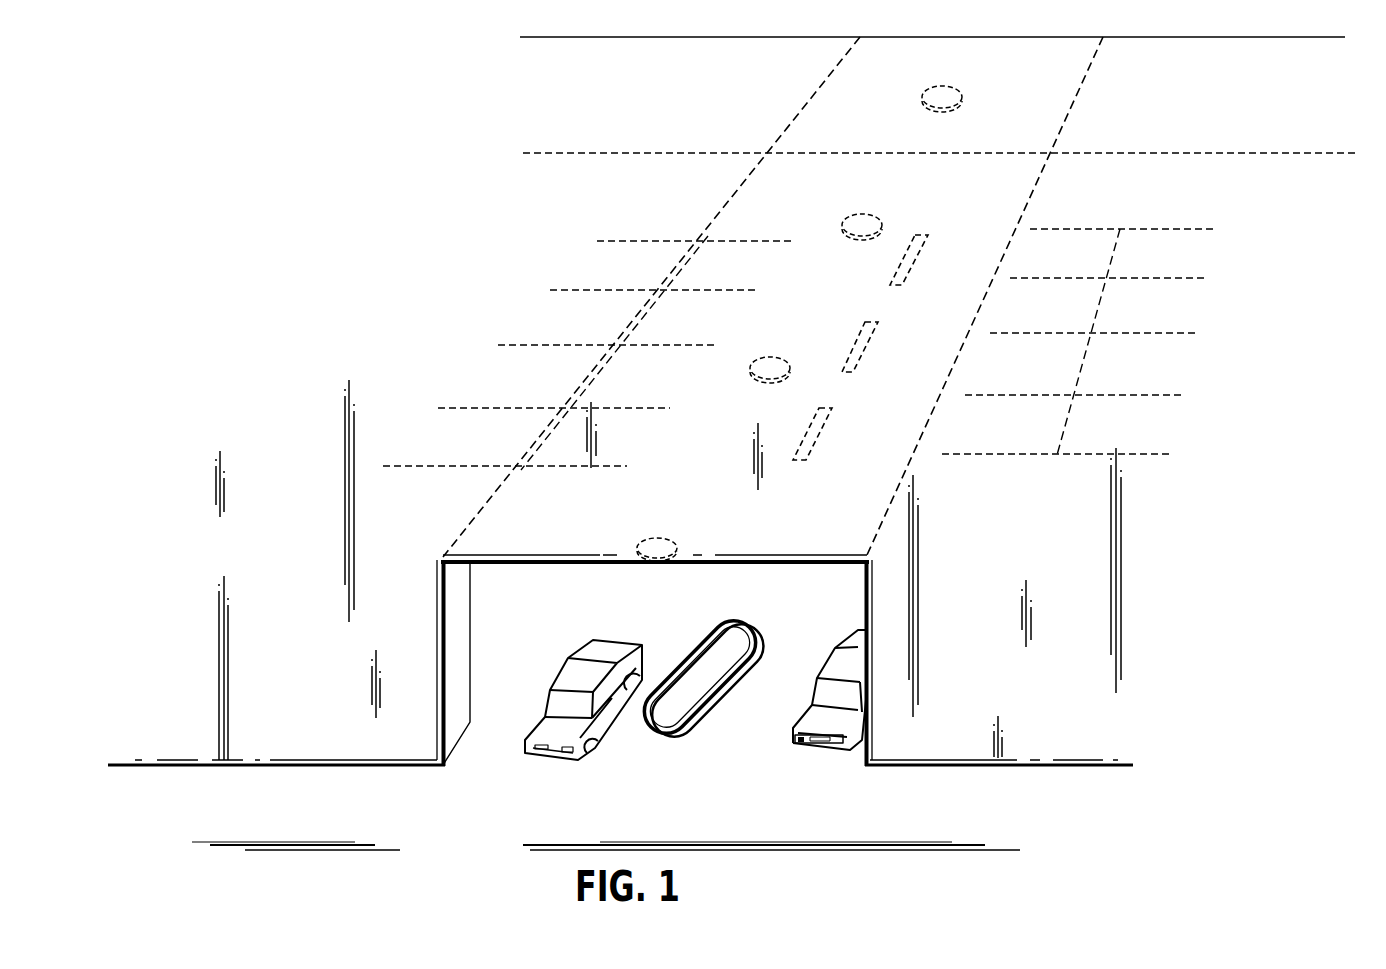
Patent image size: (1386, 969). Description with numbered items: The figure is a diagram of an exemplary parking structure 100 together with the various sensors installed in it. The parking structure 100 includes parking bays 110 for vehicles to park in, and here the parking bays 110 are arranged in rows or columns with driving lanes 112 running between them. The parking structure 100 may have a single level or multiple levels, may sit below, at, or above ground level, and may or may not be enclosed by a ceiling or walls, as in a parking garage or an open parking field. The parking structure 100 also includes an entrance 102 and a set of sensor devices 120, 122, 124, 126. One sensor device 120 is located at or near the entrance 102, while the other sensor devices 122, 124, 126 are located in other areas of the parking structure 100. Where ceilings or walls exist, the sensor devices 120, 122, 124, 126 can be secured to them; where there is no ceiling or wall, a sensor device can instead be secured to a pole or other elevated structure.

The parking structure 100 is at (726, 443).
The entrance 102 is at (509, 679).
The parking bays 110 is at (870, 309).
The driving lanes 112 is at (902, 314).
The sensor device 120 is at (688, 517).
The sensor device 122 is at (799, 339).
The sensor device 124 is at (887, 203).
The sensor device 126 is at (964, 75).